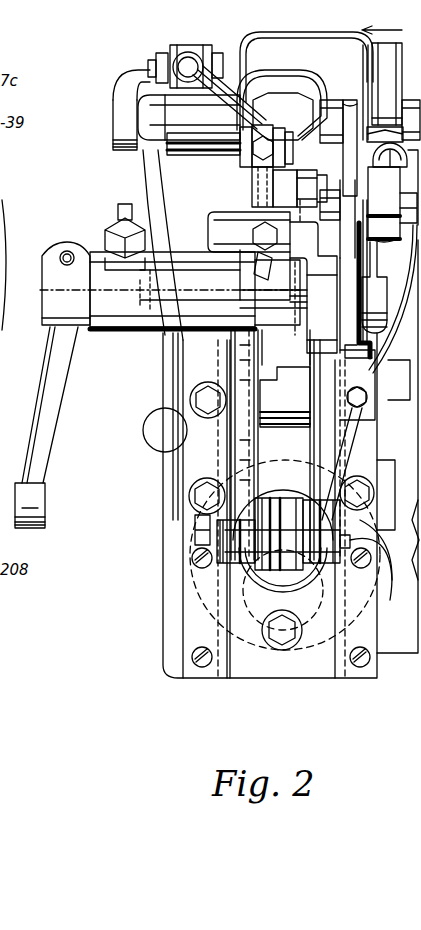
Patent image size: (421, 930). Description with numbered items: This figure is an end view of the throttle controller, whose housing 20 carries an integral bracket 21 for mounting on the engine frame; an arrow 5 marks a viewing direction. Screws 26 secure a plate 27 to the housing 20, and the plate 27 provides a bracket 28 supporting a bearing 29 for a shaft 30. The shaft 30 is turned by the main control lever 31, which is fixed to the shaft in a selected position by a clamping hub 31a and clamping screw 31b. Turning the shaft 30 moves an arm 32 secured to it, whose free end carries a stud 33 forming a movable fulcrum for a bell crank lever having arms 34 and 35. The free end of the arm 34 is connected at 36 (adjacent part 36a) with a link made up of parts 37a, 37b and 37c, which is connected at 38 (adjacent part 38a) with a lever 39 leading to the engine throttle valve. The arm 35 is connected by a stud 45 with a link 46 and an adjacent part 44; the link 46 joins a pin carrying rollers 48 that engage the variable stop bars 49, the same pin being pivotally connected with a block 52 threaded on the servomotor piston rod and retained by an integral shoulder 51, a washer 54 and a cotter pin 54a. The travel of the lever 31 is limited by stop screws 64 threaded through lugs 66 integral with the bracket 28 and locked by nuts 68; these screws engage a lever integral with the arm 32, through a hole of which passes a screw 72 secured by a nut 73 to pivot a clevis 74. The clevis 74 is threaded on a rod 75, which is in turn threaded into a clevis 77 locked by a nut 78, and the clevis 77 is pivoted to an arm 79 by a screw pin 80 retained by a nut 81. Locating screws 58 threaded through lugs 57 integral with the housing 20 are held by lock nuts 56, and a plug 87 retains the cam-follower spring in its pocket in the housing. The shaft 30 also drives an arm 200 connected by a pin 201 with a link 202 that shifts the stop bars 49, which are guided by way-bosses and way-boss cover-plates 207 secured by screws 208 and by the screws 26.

The housing 20 is at (338, 36).
The direction arrow 5 is at (387, 29).
The plug 87 is at (288, 72).
The arm 79 is at (123, 109).
The nut 81 is at (156, 52).
The clevis 77 is at (190, 44).
The nut 78 is at (205, 45).
The screw pin 80 is at (224, 54).
The rod 75 is at (212, 104).
The screw 72 is at (230, 136).
The nut 73 is at (294, 128).
The clevis 74 is at (272, 124).
The link 202 is at (300, 175).
The pin 201 is at (328, 188).
The nut 38a is at (333, 98).
The lever 39 is at (352, 98).
The nut 36a is at (347, 219).
The link part 37c is at (400, 72).
The connection 38 is at (411, 109).
The link part 37b is at (387, 159).
The connection 36 is at (392, 225).
The link part 37a is at (379, 287).
The arm 34 is at (345, 298).
The bracket 21 is at (398, 645).
The arm 200 is at (304, 248).
The lugs 66 is at (212, 230).
The nuts 68 is at (252, 238).
The stop screws 64 is at (240, 294).
The bearing 29 is at (172, 252).
The lock nuts 56 is at (132, 260).
The shaft 30 is at (42, 290).
The clamping screw 31b is at (68, 250).
The clamping hub 31a is at (46, 254).
The main control lever 31 is at (55, 405).
The locating screws 58 is at (124, 208).
The lugs 57 is at (104, 212).
The plate 27 is at (162, 600).
The bracket 28 is at (162, 392).
The way-boss cover-plates 207 is at (187, 636).
The screws 26 is at (272, 655).
The screws 208 is at (204, 569).
The stud 33 is at (300, 397).
The arm 32 is at (266, 350).
The variable stop bars 49 is at (258, 447).
The arm 35 is at (335, 456).
The link 46 is at (278, 570).
The shaft 44 is at (280, 505).
The block 52 is at (266, 505).
The rollers 48 is at (285, 555).
The shoulder 51 is at (197, 530).
The stud 45 is at (398, 495).
The washer 54 is at (338, 560).
The cotter pin 54a is at (388, 560).